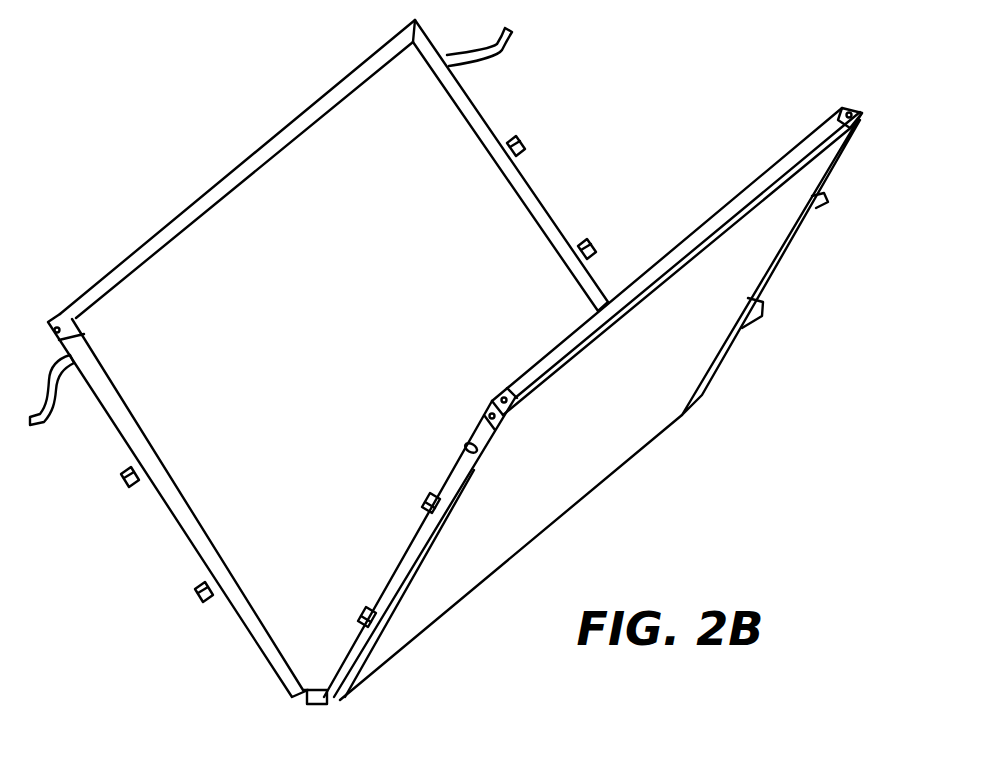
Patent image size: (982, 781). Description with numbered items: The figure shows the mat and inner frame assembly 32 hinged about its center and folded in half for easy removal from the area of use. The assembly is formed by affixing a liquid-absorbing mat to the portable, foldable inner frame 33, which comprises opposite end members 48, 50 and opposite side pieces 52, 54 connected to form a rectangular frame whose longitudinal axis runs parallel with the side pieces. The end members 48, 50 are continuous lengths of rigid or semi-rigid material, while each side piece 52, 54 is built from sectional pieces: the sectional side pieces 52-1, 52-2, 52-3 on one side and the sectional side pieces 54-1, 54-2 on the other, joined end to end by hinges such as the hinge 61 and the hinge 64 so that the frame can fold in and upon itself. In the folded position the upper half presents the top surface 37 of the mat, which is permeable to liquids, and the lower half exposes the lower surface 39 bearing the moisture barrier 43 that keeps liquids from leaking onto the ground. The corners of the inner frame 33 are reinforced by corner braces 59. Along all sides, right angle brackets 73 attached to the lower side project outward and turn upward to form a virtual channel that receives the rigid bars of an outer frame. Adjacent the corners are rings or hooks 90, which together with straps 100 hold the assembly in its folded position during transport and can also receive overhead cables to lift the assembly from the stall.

The mat and inner frame assembly 32 is at (122, 147).
The inner frame 33 is at (122, 445).
The top surface 37 is at (337, 281).
The lower surface 39 is at (702, 361).
The moisture barrier 43 is at (612, 431).
The end member 48 is at (268, 168).
The end member 50 is at (622, 286).
The side piece 52 is at (200, 517).
The sectional side piece 52-1 is at (122, 396).
The sectional side piece 52-2 is at (480, 457).
The sectional side piece 52-3 is at (313, 706).
The side piece 54 is at (522, 198).
The sectional side piece 54-1 is at (472, 98).
The sectional side piece 54-2 is at (381, 637).
The corner brace 59 is at (48, 320).
The hinge 61 is at (310, 690).
The hinge 64 is at (324, 688).
The right angle bracket 73 is at (593, 243).
The ring or hook 90 is at (466, 442).
The strap 100 is at (520, 48).